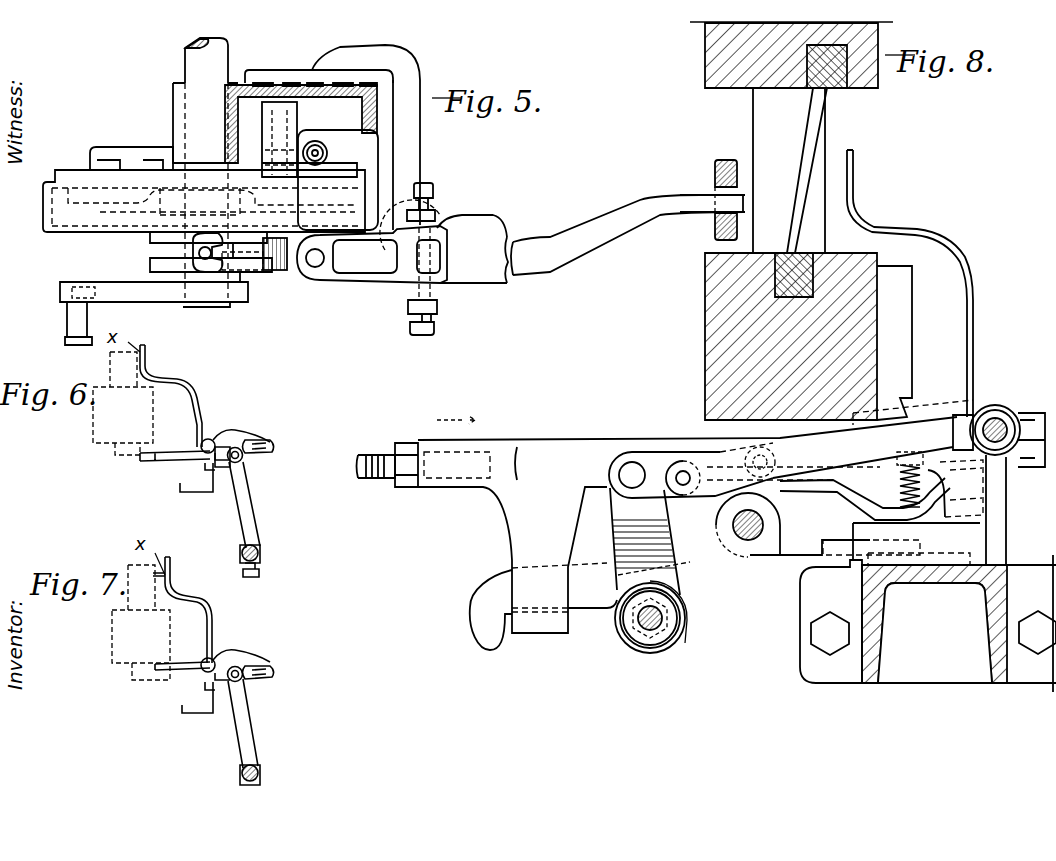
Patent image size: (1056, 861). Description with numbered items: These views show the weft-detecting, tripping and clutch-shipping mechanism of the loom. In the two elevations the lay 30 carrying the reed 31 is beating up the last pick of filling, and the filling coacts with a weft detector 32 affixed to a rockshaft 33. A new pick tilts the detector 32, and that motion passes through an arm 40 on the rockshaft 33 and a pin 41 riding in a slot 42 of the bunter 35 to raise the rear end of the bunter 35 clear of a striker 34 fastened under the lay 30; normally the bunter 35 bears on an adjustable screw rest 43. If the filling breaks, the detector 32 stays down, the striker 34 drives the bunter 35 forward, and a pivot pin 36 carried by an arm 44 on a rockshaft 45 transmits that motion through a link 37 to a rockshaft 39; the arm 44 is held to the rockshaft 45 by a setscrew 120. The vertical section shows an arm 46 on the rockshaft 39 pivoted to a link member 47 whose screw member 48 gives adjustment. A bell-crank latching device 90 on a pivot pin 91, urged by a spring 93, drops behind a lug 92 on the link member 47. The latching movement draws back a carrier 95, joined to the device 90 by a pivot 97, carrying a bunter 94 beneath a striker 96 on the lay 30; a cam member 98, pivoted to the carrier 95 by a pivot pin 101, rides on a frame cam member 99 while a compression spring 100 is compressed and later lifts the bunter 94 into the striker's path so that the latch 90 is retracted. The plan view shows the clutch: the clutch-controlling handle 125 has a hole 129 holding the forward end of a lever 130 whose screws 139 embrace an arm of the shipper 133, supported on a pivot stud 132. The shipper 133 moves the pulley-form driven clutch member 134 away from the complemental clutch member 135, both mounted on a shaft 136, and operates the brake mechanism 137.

In FIG. 6, the lay 30 is at (93, 430).
In FIG. 7, the lay 30 is at (112, 640).
In FIG. 8, the lay 30 is at (705, 307).
In FIG. 8, the reed 31 is at (813, 123).
In FIG. 6, the weft detectors 32 is at (152, 378).
In FIG. 7, the weft detectors 32 is at (196, 598).
In FIG. 8, the weft detectors 32 is at (855, 182).
In FIG. 6, the rockshaft 33 is at (210, 440).
In FIG. 7, the rockshaft 33 is at (208, 665).
In FIG. 8, the rockshaft 33 is at (997, 418).
In FIG. 6, the striker 34 is at (140, 463).
In FIG. 7, the striker 34 is at (155, 678).
In FIG. 6, the bunter 35 is at (173, 452).
In FIG. 7, the bunter 35 is at (184, 663).
In FIG. 6, the pivot pin 36 is at (244, 458).
In FIG. 7, the pivot pin 36 is at (245, 670).
In FIG. 6, the link 37 is at (224, 470).
In FIG. 8, the rockshaft 39 is at (747, 542).
In FIG. 6, the arm 40 is at (233, 430).
In FIG. 7, the arm 40 is at (235, 655).
In FIG. 6, the pin 41 is at (272, 448).
In FIG. 7, the pin 41 is at (265, 681).
In FIG. 6, the slot 42 is at (262, 438).
In FIG. 6, the rest 43 is at (205, 470).
In FIG. 7, the rest 43 is at (208, 690).
In FIG. 6, the arm 44 is at (248, 505).
In FIG. 7, the arm 44 is at (248, 733).
In FIG. 6, the rockshaft 45 is at (262, 553).
In FIG. 7, the rockshaft 45 is at (262, 772).
In FIG. 8, the arm 46 is at (727, 495).
In FIG. 8, the link member 47 is at (532, 446).
In FIG. 8, the link member 48 is at (372, 453).
In FIG. 8, the latching device 90 is at (483, 592).
In FIG. 8, the pivot pin 91 is at (648, 630).
In FIG. 8, the lug 92 is at (548, 625).
In FIG. 8, the spring 93 is at (688, 622).
In FIG. 8, the bunter 94 is at (922, 424).
In FIG. 8, the carrier 95 is at (945, 450).
In FIG. 8, the striker 96 is at (907, 322).
In FIG. 8, the pivot 97 is at (619, 474).
In FIG. 8, the cam member 98 is at (875, 507).
In FIG. 8, the cam member 99 is at (924, 529).
In FIG. 8, the compression spring 100 is at (897, 480).
In FIG. 8, the pivot pin 101 is at (683, 471).
In FIG. 6, the setscrew 120 is at (262, 573).
In FIG. 8, the clutch-controlling handle 125 is at (723, 162).
In FIG. 8, the hole 129 is at (715, 192).
In FIG. 5, the lever 130 is at (583, 230).
In FIG. 5, the pivot stud 132 is at (318, 268).
In FIG. 5, the shipper 133 is at (277, 272).
In FIG. 5, the driven clutch member 134 is at (66, 233).
In FIG. 5, the complemental clutch member 135 is at (72, 170).
In FIG. 5, the shaft 136 is at (193, 58).
In FIG. 5, the brake mechanism 137 is at (338, 147).
In FIG. 5, the screws 139 is at (436, 207).